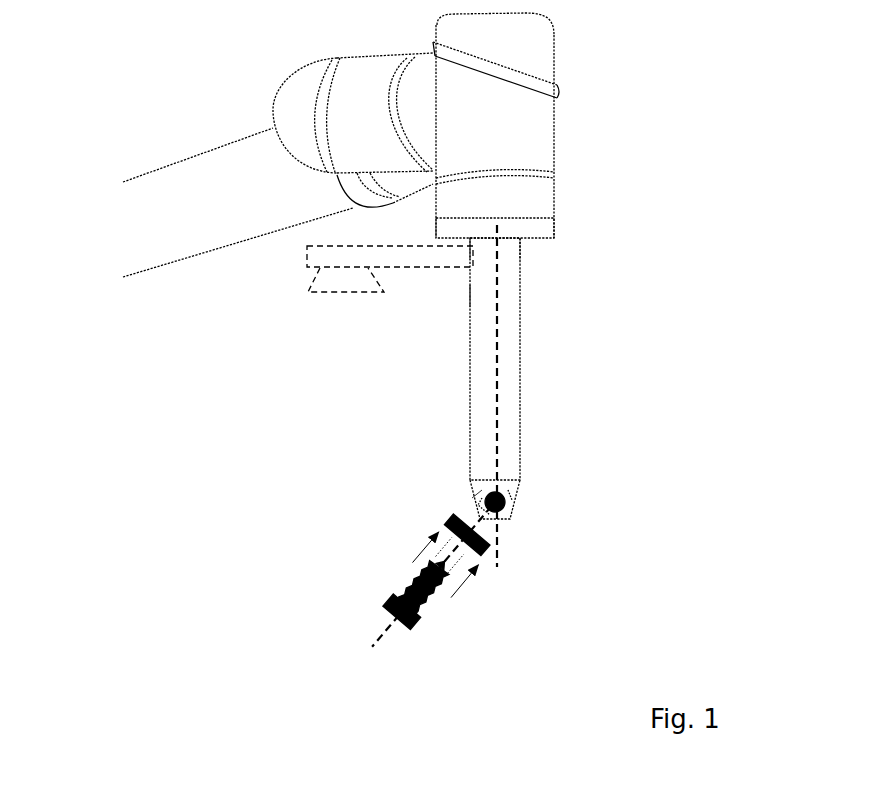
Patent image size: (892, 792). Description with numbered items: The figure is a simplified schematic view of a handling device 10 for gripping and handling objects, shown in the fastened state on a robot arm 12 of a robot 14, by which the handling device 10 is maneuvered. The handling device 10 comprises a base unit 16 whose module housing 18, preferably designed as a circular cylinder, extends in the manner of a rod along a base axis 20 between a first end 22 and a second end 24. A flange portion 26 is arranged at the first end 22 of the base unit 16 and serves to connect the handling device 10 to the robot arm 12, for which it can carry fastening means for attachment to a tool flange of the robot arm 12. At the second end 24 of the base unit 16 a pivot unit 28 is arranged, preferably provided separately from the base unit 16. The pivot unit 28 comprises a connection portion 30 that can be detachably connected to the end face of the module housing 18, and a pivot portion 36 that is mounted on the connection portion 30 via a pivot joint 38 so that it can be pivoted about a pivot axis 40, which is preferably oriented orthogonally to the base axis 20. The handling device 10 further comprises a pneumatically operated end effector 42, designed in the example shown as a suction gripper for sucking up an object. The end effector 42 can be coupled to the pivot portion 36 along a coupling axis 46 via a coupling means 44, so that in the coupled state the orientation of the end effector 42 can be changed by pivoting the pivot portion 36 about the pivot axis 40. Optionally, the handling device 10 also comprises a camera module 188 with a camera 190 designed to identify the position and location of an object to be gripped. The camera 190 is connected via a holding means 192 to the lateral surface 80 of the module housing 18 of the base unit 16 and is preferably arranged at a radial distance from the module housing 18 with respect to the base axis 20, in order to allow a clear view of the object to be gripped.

The handling device 10 is at (686, 392).
The robot arm 12 is at (545, 128).
The robot 14 is at (200, 98).
The base unit 16 is at (537, 396).
The module housing 18 is at (522, 368).
The base axis 20 is at (500, 554).
The first end 22 is at (552, 254).
The second end 24 is at (531, 471).
The flange portion 26 is at (548, 229).
The pivot unit 28 is at (573, 541).
The connection portion 30 is at (517, 499).
The pivot portion 36 is at (472, 498).
The pivot joint 38 is at (480, 486).
The pivot axis 40 is at (487, 495).
The end effector 42 is at (418, 624).
The coupling means 44 is at (480, 591).
The coupling axis 46 is at (368, 650).
The lateral surface 80 is at (468, 296).
The camera module 188 is at (272, 311).
The camera 190 is at (339, 290).
The holding means 192 is at (304, 254).